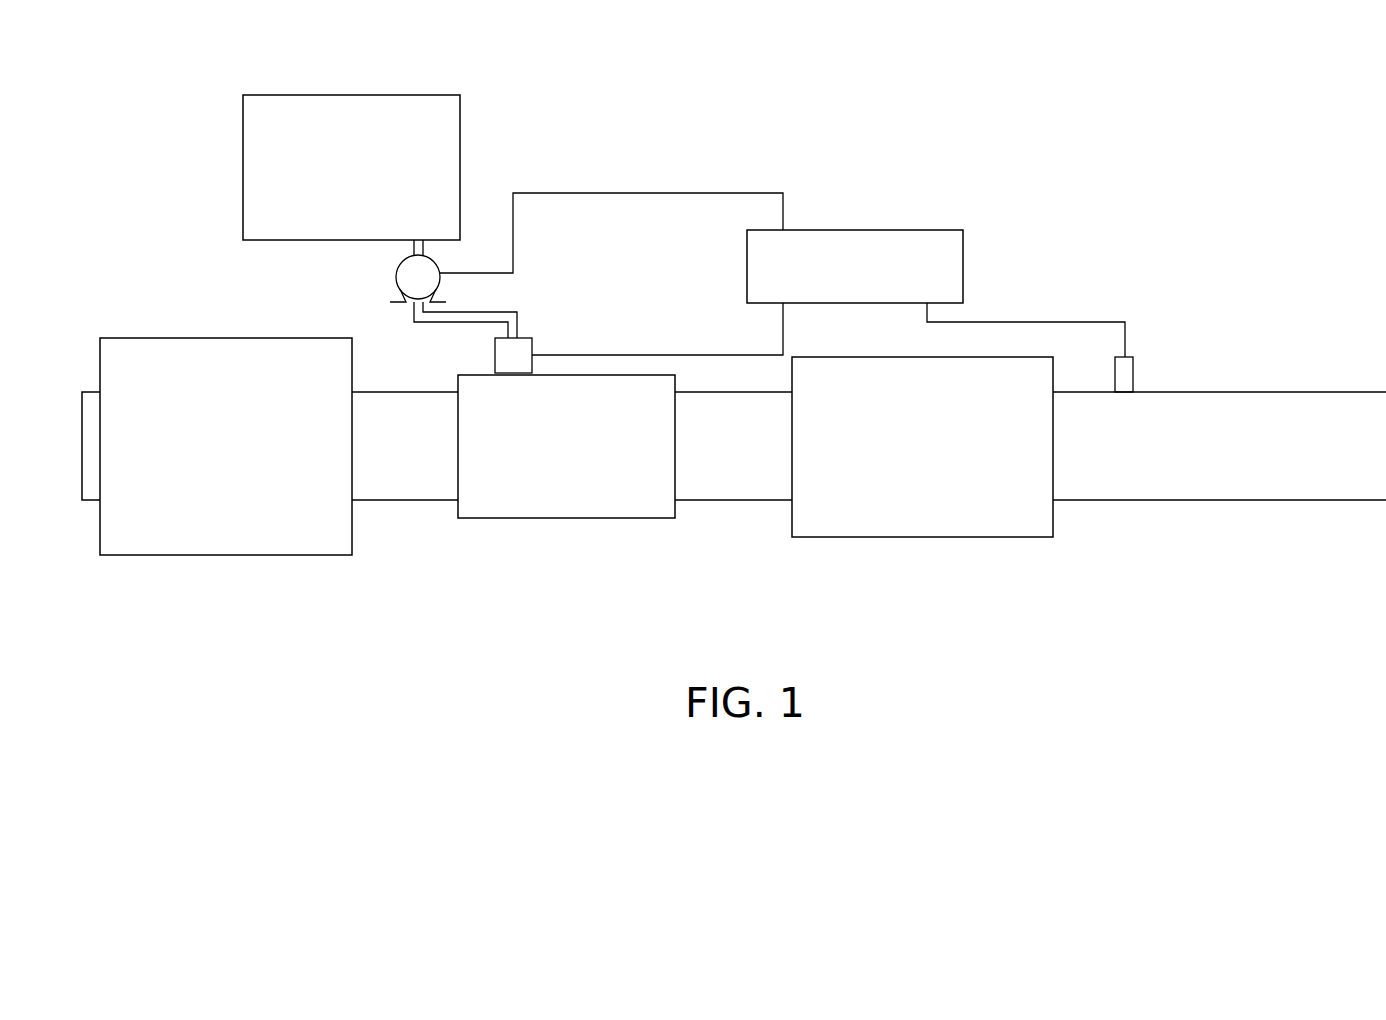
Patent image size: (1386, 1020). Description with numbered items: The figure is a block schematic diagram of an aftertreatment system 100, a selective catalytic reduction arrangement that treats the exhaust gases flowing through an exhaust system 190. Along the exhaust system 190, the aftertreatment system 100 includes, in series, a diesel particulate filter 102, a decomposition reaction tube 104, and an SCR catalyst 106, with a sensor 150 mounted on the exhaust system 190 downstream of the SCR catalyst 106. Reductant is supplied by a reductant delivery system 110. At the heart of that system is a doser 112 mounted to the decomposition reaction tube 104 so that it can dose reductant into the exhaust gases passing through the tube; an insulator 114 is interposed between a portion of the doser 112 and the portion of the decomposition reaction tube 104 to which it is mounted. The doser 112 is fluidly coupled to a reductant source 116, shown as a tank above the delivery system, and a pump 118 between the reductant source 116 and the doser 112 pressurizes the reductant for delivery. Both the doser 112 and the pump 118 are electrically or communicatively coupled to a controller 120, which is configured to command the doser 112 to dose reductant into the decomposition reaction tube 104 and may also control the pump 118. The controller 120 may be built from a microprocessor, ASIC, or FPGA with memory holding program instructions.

The aftertreatment system 100 is at (999, 302).
The diesel particulate filter 102 is at (253, 555).
The decomposition reaction tube 104 is at (668, 374).
The SCR catalyst 106 is at (933, 538).
The reductant delivery system 110 is at (623, 282).
The doser 112 is at (533, 348).
The insulator 114 is at (495, 368).
The reductant source 116 is at (413, 94).
The pump 118 is at (396, 279).
The controller 120 is at (837, 229).
The sensor 150 is at (1148, 376).
The exhaust system 190 is at (452, 586).